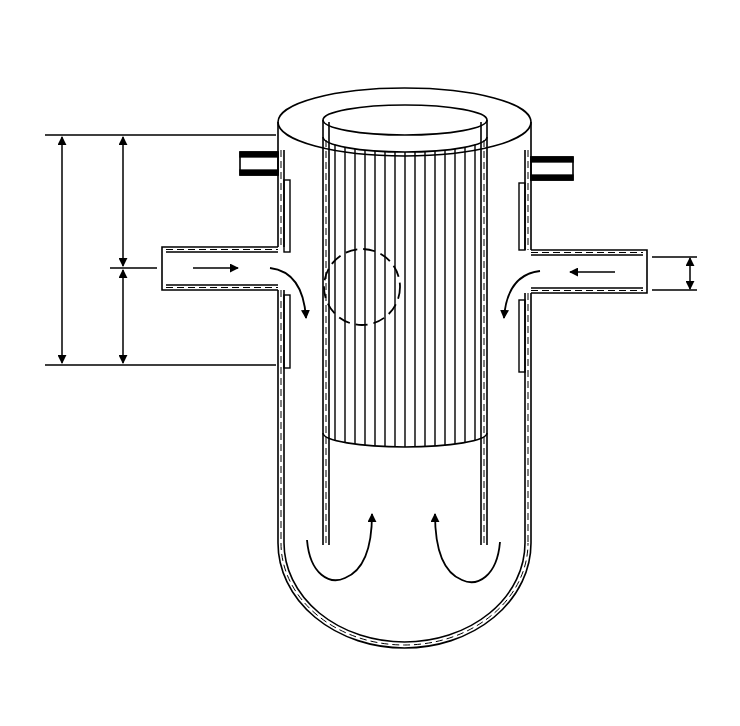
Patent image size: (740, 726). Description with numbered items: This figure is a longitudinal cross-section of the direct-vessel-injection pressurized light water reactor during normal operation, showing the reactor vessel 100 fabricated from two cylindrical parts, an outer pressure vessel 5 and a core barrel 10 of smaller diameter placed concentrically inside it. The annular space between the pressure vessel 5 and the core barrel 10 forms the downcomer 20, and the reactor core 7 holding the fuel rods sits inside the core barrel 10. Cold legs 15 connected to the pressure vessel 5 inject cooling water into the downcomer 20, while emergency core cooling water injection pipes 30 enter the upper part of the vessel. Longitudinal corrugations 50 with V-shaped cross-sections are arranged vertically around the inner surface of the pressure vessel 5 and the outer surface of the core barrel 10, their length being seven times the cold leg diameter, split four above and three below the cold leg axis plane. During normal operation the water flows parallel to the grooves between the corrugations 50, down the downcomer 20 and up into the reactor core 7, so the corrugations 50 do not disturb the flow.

The reactor vessel 100 is at (620, 40).
The pressure vessel 5 is at (530, 137).
The core barrel 10 is at (466, 108).
The cold legs 15 is at (190, 292).
The downcomer 20 is at (502, 528).
The emergency core cooling water injection pipe 30 is at (250, 152).
The longitudinal corrugations 50 is at (278, 213).
The reactor core 7 is at (423, 480).